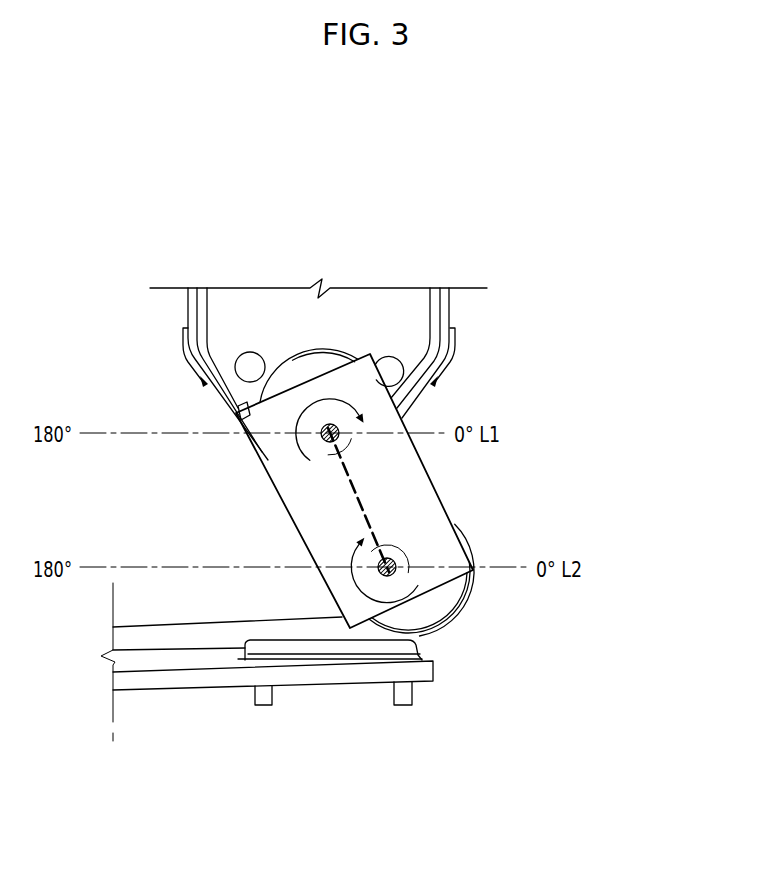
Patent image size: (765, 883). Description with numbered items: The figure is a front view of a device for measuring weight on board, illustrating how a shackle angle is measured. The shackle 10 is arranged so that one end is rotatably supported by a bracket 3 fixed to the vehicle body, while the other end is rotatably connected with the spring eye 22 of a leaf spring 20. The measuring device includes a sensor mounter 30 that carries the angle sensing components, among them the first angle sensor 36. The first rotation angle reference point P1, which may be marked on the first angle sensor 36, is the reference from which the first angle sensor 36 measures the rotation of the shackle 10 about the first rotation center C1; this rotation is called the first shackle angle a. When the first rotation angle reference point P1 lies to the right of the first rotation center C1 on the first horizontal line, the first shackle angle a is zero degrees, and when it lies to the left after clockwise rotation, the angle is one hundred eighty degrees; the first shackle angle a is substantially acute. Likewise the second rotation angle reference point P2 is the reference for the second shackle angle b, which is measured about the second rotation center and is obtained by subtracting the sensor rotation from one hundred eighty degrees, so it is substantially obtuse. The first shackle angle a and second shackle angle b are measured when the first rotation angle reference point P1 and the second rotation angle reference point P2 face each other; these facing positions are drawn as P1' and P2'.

The bracket 3 is at (375, 310).
The shackle 10 is at (293, 380).
The leaf spring 20 is at (212, 676).
The spring eye 22 is at (436, 623).
The sensor mounter 30 is at (433, 510).
The first angle sensor 36 is at (238, 418).
The first rotation center C1 is at (330, 424).
The first shackle angle a is at (330, 430).
The second shackle angle b is at (384, 565).
The first rotation angle reference point P1 is at (407, 410).
The facing position of first rotation angle reference point P1' is at (278, 488).
The second rotation angle reference point P2 is at (307, 593).
The facing position of second rotation angle reference point P2' is at (455, 539).